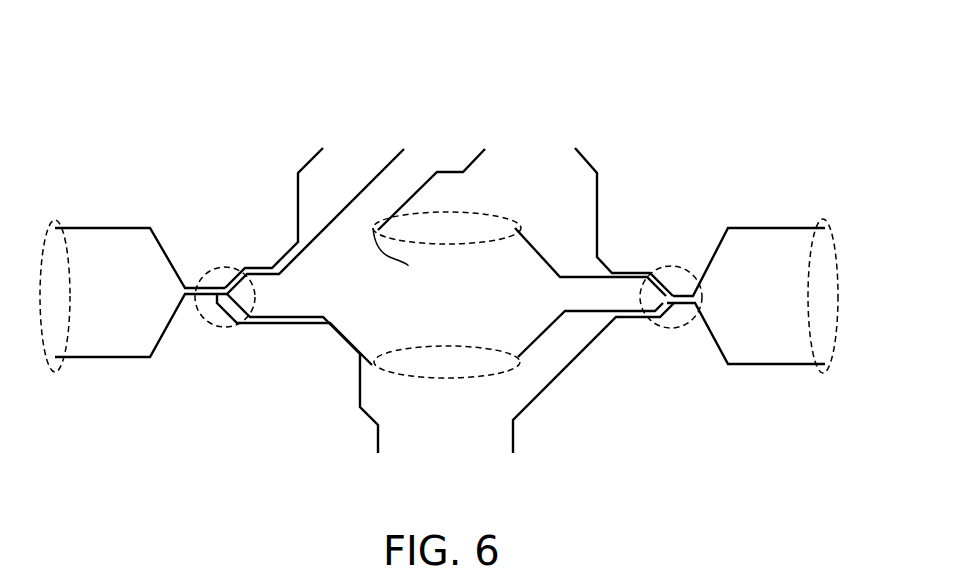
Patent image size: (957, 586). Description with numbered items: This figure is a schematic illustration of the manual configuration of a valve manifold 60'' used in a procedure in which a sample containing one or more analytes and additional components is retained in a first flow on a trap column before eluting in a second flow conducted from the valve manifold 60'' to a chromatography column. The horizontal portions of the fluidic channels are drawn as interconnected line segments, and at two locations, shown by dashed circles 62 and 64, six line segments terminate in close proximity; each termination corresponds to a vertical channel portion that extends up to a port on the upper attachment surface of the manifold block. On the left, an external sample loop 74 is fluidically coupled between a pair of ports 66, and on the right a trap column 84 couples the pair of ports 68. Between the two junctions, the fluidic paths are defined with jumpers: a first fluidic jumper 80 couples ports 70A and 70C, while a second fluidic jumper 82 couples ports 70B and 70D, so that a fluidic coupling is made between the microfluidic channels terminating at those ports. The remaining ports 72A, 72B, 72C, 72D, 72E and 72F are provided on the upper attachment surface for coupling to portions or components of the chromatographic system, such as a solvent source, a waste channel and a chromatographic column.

The valve manifold 60'' is at (775, 53).
The dashed circle 62 is at (220, 265).
The dashed circle 64 is at (672, 266).
The pair of ports 66 is at (54, 226).
The pair of ports 68 is at (824, 226).
The port 70A is at (379, 366).
The port 70B is at (416, 255).
The port 70C is at (517, 362).
The port 70D is at (513, 232).
The port 72A is at (323, 148).
The port 72B is at (404, 149).
The port 72C is at (378, 453).
The port 72D is at (485, 149).
The port 72E is at (513, 453).
The port 72F is at (575, 148).
The external sample loop 74 is at (70, 293).
The first fluidic jumper 80 is at (440, 378).
The second fluidic jumper 82 is at (452, 211).
The trap column 84 is at (840, 293).